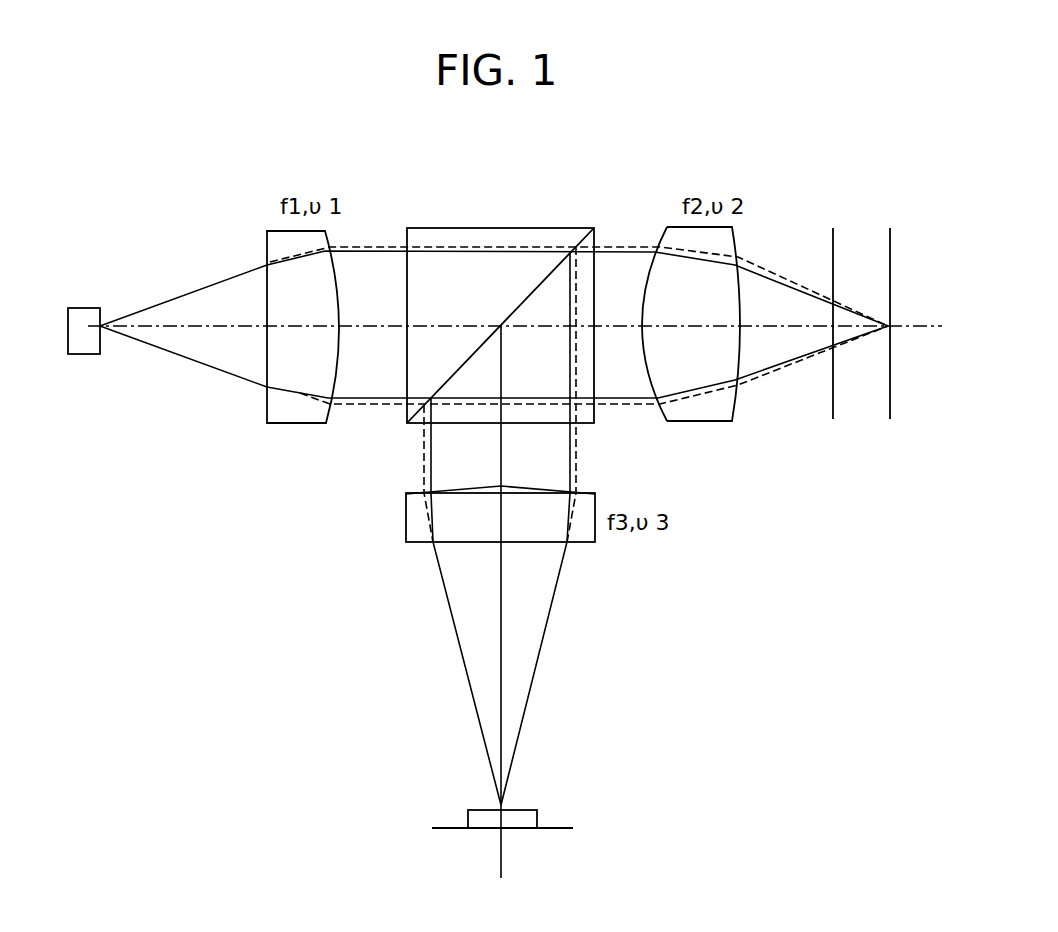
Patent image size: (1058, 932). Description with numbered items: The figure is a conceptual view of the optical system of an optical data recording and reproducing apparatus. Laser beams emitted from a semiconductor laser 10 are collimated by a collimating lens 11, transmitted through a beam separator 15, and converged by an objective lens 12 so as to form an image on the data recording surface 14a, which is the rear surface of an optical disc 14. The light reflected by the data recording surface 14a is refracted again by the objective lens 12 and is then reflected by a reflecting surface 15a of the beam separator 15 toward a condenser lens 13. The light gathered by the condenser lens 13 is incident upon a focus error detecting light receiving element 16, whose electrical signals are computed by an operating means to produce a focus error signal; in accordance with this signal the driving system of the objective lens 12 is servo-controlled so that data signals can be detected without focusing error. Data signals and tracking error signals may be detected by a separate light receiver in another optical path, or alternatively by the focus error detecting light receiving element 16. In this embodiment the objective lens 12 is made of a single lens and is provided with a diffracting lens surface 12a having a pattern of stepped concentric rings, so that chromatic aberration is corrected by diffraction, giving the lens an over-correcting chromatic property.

The semiconductor laser 10 is at (92, 343).
The collimating lens 11 is at (306, 413).
The objective lens 12 is at (721, 412).
The diffracting lens surface 12a is at (633, 383).
The condenser lens 13 is at (421, 528).
The optical disc 14 is at (858, 242).
The data recording surface 14a is at (917, 255).
The beam separator 15 is at (527, 242).
The reflecting surface 15a is at (538, 285).
The focus error detecting light receiving element 16 is at (525, 818).